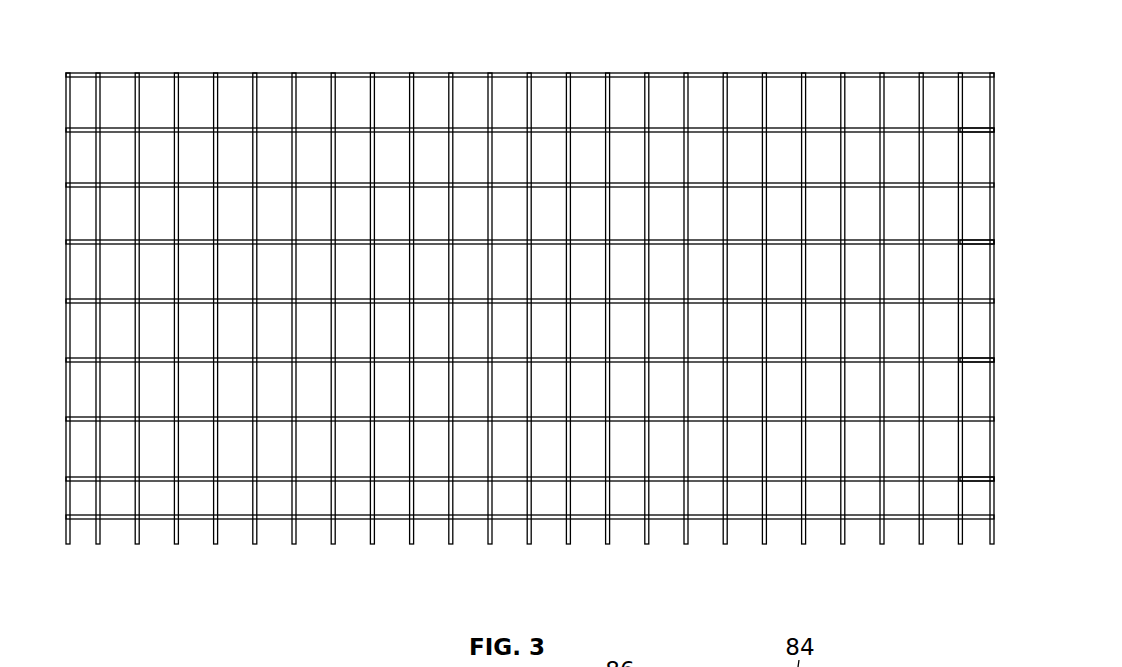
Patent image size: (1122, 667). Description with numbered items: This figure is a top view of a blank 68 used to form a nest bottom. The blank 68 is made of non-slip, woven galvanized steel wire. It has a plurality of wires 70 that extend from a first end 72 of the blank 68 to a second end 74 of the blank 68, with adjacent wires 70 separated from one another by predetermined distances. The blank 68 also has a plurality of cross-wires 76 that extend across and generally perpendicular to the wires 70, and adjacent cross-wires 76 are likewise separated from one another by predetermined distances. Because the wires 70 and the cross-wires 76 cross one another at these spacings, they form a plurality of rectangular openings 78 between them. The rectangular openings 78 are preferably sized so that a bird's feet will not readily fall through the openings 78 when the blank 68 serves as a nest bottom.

The blank 68 is at (1028, 165).
The wires 70 is at (137, 546).
The first end 72 is at (67, 547).
The second end 74 is at (69, 73).
The cross-wires 76 is at (975, 130).
The rectangular openings 78 is at (113, 93).